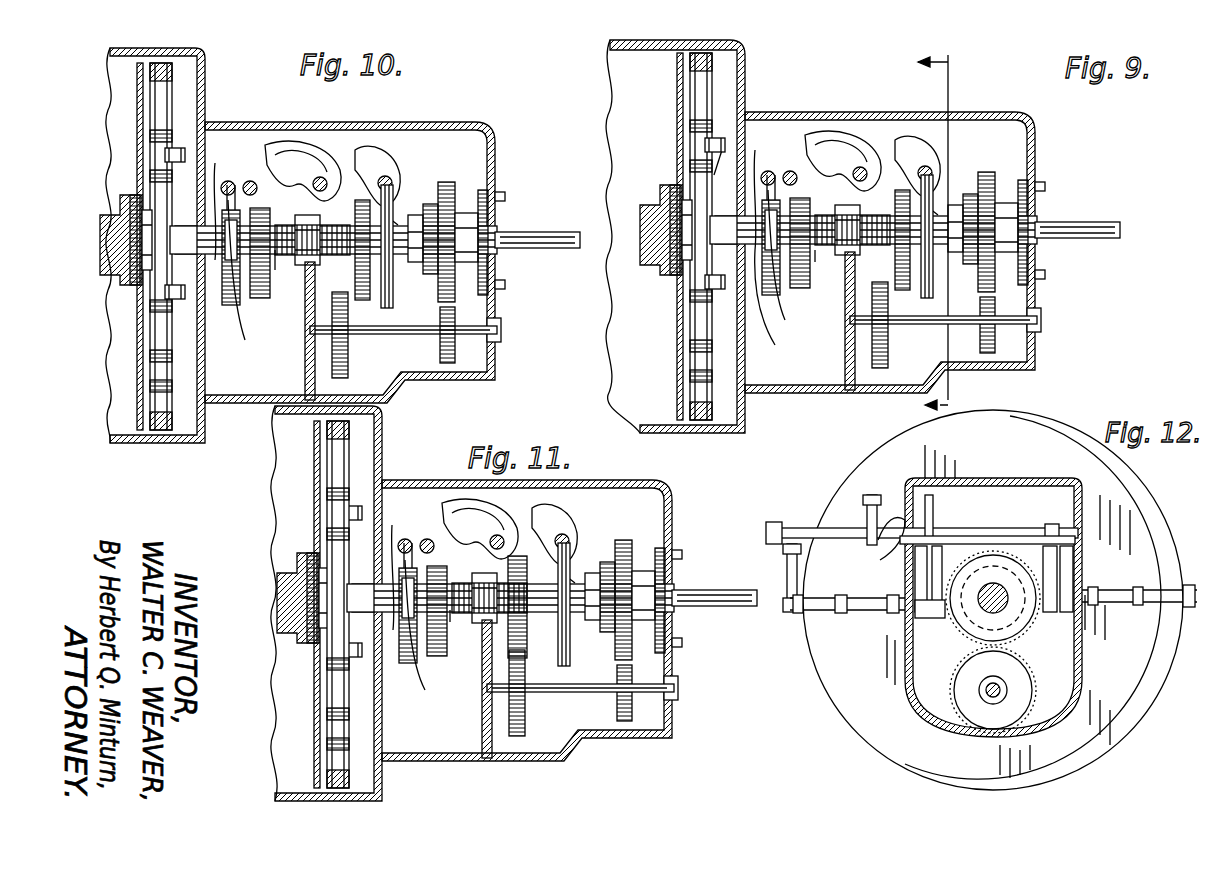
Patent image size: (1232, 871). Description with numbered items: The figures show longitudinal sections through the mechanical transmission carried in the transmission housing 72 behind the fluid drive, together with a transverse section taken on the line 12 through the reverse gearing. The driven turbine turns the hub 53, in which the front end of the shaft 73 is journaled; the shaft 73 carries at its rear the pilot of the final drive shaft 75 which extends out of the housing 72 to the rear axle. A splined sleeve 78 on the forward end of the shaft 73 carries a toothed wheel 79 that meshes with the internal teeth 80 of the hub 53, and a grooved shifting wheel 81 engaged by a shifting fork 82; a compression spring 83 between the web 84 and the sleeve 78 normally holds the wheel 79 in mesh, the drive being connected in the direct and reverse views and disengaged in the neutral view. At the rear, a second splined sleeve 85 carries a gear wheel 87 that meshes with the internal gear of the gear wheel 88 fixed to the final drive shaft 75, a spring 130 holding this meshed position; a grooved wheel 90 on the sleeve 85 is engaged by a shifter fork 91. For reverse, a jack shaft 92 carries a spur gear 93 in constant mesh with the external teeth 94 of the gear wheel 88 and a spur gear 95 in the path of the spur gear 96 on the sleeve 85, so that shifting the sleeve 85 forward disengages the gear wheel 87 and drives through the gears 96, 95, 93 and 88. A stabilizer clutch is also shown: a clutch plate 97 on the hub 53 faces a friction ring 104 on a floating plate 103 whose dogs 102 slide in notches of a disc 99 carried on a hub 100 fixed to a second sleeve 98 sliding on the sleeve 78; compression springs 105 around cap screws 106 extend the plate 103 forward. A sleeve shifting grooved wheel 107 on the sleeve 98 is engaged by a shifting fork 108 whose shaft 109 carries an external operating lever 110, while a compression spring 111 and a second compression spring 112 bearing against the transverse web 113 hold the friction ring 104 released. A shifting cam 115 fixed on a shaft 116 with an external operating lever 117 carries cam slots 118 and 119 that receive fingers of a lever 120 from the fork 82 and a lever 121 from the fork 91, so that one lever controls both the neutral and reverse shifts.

In FIG. 9, the section line 12 is at (948, 62).
In FIG. 10, the hub 53 is at (108, 215).
In FIG. 9, the hub 53 is at (655, 205).
In FIG. 11, the hub 53 is at (290, 590).
In FIG. 10, the transmission housing 72 is at (425, 122).
In FIG. 9, the transmission housing 72 is at (888, 116).
In FIG. 11, the transmission housing 72 is at (527, 620).
In FIG. 12, the transmission housing 72 is at (1055, 478).
In FIG. 10, the shaft 73 is at (105, 258).
In FIG. 9, the shaft 73 is at (650, 245).
In FIG. 11, the shaft 73 is at (282, 608).
In FIG. 12, the shaft 73 is at (1005, 610).
In FIG. 10, the final drive shaft 75 is at (545, 232).
In FIG. 9, the final drive shaft 75 is at (1085, 213).
In FIG. 11, the final drive shaft 75 is at (712, 592).
In FIG. 10, the sleeve 78 is at (258, 300).
In FIG. 9, the sleeve 78 is at (798, 270).
In FIG. 11, the sleeve 78 is at (435, 655).
In FIG. 10, the toothed wheel 79 is at (140, 290).
In FIG. 9, the toothed wheel 79 is at (660, 272).
In FIG. 11, the toothed wheel 79 is at (320, 635).
In FIG. 10, the internal teeth 80 is at (125, 285).
In FIG. 10, the grooved shifting wheel 81 is at (240, 290).
In FIG. 9, the grooved shifting wheel 81 is at (790, 262).
In FIG. 11, the grooved shifting wheel 81 is at (418, 640).
In FIG. 10, the shifting fork 82 is at (250, 180).
In FIG. 9, the shifting fork 82 is at (790, 170).
In FIG. 11, the shifting fork 82 is at (427, 538).
In FIG. 10, the compression spring 83 is at (275, 270).
In FIG. 9, the compression spring 83 is at (814, 264).
In FIG. 11, the compression spring 83 is at (454, 629).
In FIG. 10, the web 84 is at (300, 270).
In FIG. 9, the web 84 is at (840, 255).
In FIG. 11, the web 84 is at (478, 640).
In FIG. 10, the sleeve 85 is at (405, 220).
In FIG. 9, the sleeve 85 is at (920, 265).
In FIG. 11, the sleeve 85 is at (578, 640).
In FIG. 12, the sleeve 85 is at (993, 598).
In FIG. 10, the gear wheel 87 is at (416, 262).
In FIG. 9, the gear wheel 87 is at (958, 205).
In FIG. 11, the gear wheel 87 is at (596, 622).
In FIG. 10, the gear wheel 88 is at (432, 204).
In FIG. 9, the gear wheel 88 is at (972, 200).
In FIG. 11, the gear wheel 88 is at (615, 562).
In FIG. 10, the grooved wheel 90 is at (388, 300).
In FIG. 9, the grooved wheel 90 is at (932, 285).
In FIG. 11, the grooved wheel 90 is at (562, 660).
In FIG. 12, the grooved wheel 90 is at (965, 612).
In FIG. 10, the shifter fork 91 is at (386, 175).
In FIG. 9, the shifter fork 91 is at (925, 165).
In FIG. 11, the shifter fork 91 is at (570, 541).
In FIG. 12, the shifter fork 91 is at (1020, 535).
In FIG. 10, the jack shaft 92 is at (405, 335).
In FIG. 9, the jack shaft 92 is at (932, 325).
In FIG. 11, the jack shaft 92 is at (600, 693).
In FIG. 12, the jack shaft 92 is at (993, 676).
In FIG. 10, the spur gear 93 is at (457, 320).
In FIG. 9, the spur gear 93 is at (992, 310).
In FIG. 11, the spur gear 93 is at (635, 680).
In FIG. 10, the external teeth 94 is at (447, 188).
In FIG. 9, the external teeth 94 is at (985, 172).
In FIG. 11, the external teeth 94 is at (627, 548).
In FIG. 10, the spur gear 95 is at (345, 370).
In FIG. 9, the spur gear 95 is at (885, 360).
In FIG. 11, the spur gear 95 is at (525, 725).
In FIG. 12, the spur gear 95 is at (1025, 678).
In FIG. 10, the spur gear 96 is at (363, 300).
In FIG. 9, the spur gear 96 is at (900, 290).
In FIG. 11, the spur gear 96 is at (527, 640).
In FIG. 12, the spur gear 96 is at (960, 632).
In FIG. 10, the clutch plate 97 is at (137, 140).
In FIG. 9, the clutch plate 97 is at (677, 130).
In FIG. 11, the clutch plate 97 is at (318, 518).
In FIG. 10, the second sleeve 98 is at (183, 240).
In FIG. 9, the second sleeve 98 is at (723, 230).
In FIG. 11, the second sleeve 98 is at (368, 710).
In FIG. 10, the disc 99 is at (160, 378).
In FIG. 9, the disc 99 is at (712, 88).
In FIG. 11, the disc 99 is at (335, 685).
In FIG. 9, the hub 100 is at (725, 156).
In FIG. 11, the hub 100 is at (340, 640).
In FIG. 9, the dogs 102 is at (720, 52).
In FIG. 11, the dogs 102 is at (355, 782).
In FIG. 9, the floating plate 103 is at (718, 70).
In FIG. 11, the floating plate 103 is at (355, 765).
In FIG. 10, the friction ring 104 is at (140, 108).
In FIG. 9, the friction ring 104 is at (685, 100).
In FIG. 11, the friction ring 104 is at (335, 780).
In FIG. 11, the compression springs 105 is at (355, 740).
In FIG. 11, the cap screws 106 is at (360, 725).
In FIG. 10, the sleeve shifting grooved wheel 107 is at (245, 345).
In FIG. 9, the sleeve shifting grooved wheel 107 is at (791, 259).
In FIG. 11, the sleeve shifting grooved wheel 107 is at (430, 631).
In FIG. 10, the shifting fork 108 is at (232, 180).
In FIG. 9, the shifting fork 108 is at (770, 170).
In FIG. 11, the shifting fork 108 is at (406, 538).
In FIG. 12, the shifting fork 108 is at (982, 535).
In FIG. 12, the shaft 109 is at (800, 528).
In FIG. 12, the operating lever 110 is at (797, 570).
In FIG. 10, the compression spring 111 is at (172, 200).
In FIG. 9, the compression spring 111 is at (675, 222).
In FIG. 11, the compression spring 111 is at (340, 560).
In FIG. 10, the second compression spring 112 is at (218, 201).
In FIG. 9, the second compression spring 112 is at (774, 249).
In FIG. 11, the second compression spring 112 is at (392, 535).
In FIG. 10, the transverse web 113 is at (222, 128).
In FIG. 9, the transverse web 113 is at (742, 140).
In FIG. 11, the transverse web 113 is at (386, 494).
In FIG. 10, the shifting cam 115 is at (335, 160).
In FIG. 9, the shifting cam 115 is at (855, 148).
In FIG. 11, the shifting cam 115 is at (520, 515).
In FIG. 12, the shifting cam 115 is at (935, 508).
In FIG. 10, the shaft 116 is at (320, 177).
In FIG. 9, the shaft 116 is at (869, 177).
In FIG. 11, the shaft 116 is at (508, 534).
In FIG. 12, the operating lever 117 is at (872, 495).
In FIG. 10, the cam slot 118 is at (290, 160).
In FIG. 9, the cam slot 118 is at (845, 142).
In FIG. 11, the cam slot 118 is at (495, 545).
In FIG. 9, the cam slot 119 is at (903, 160).
In FIG. 11, the cam slot 119 is at (480, 510).
In FIG. 10, the lever 120 is at (310, 184).
In FIG. 9, the lever 120 is at (820, 192).
In FIG. 11, the lever 120 is at (470, 540).
In FIG. 10, the lever 121 is at (392, 188).
In FIG. 9, the lever 121 is at (930, 178).
In FIG. 11, the lever 121 is at (550, 565).
In FIG. 10, the spring 130 is at (325, 258).
In FIG. 9, the spring 130 is at (862, 247).
In FIG. 11, the spring 130 is at (525, 598).